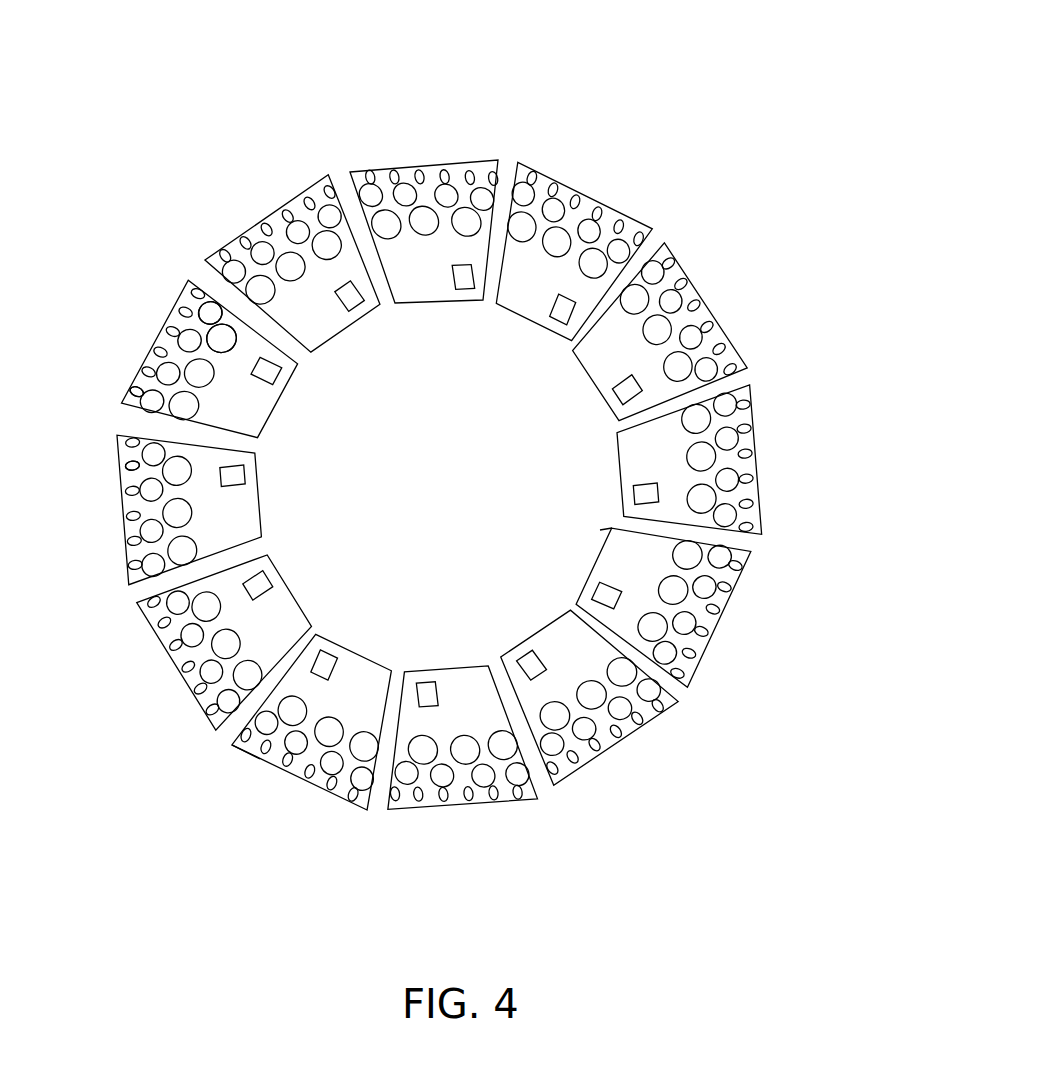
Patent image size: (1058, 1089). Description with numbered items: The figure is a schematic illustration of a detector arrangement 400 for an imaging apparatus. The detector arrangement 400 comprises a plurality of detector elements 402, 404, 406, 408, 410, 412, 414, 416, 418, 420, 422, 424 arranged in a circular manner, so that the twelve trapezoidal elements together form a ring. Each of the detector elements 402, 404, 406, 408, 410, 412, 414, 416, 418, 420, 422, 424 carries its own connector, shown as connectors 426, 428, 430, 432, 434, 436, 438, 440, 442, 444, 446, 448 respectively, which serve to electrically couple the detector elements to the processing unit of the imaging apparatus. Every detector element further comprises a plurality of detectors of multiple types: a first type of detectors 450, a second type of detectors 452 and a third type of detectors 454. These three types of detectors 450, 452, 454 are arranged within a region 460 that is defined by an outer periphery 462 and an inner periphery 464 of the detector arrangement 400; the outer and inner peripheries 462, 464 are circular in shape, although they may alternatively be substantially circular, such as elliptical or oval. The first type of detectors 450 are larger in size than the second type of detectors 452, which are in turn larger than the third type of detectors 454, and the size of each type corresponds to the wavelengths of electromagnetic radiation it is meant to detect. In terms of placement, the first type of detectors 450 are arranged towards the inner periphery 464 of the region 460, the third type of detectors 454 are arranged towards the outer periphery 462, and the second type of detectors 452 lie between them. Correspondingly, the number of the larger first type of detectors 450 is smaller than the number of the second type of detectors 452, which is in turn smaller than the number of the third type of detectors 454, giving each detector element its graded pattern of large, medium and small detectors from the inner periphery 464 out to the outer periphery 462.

The detector arrangement 400 is at (669, 73).
The detector element 402 is at (461, 172).
The detector element 404 is at (630, 212).
The detector element 406 is at (686, 266).
The detector element 408 is at (756, 440).
The detector element 410 is at (738, 598).
The detector element 412 is at (617, 748).
The detector element 414 is at (475, 800).
The detector element 416 is at (288, 773).
The detector element 418 is at (174, 658).
The detector element 420 is at (121, 510).
The detector element 422 is at (168, 320).
The detector element 424 is at (272, 218).
The connector 426 is at (463, 288).
The connector 428 is at (556, 320).
The connector 430 is at (630, 393).
The connector 432 is at (642, 497).
The connector 434 is at (594, 592).
The connector 436 is at (522, 658).
The connector 438 is at (428, 685).
The connector 440 is at (330, 658).
The connector 442 is at (288, 580).
The connector 444 is at (242, 480).
The connector 446 is at (283, 393).
The connector 448 is at (350, 310).
The first type of detectors 450 is at (217, 328).
The second type of detectors 452 is at (150, 408).
The third type of detectors 454 is at (132, 464).
The region 460 is at (230, 300).
The outer periphery 462 is at (223, 738).
The inner periphery 464 is at (608, 520).